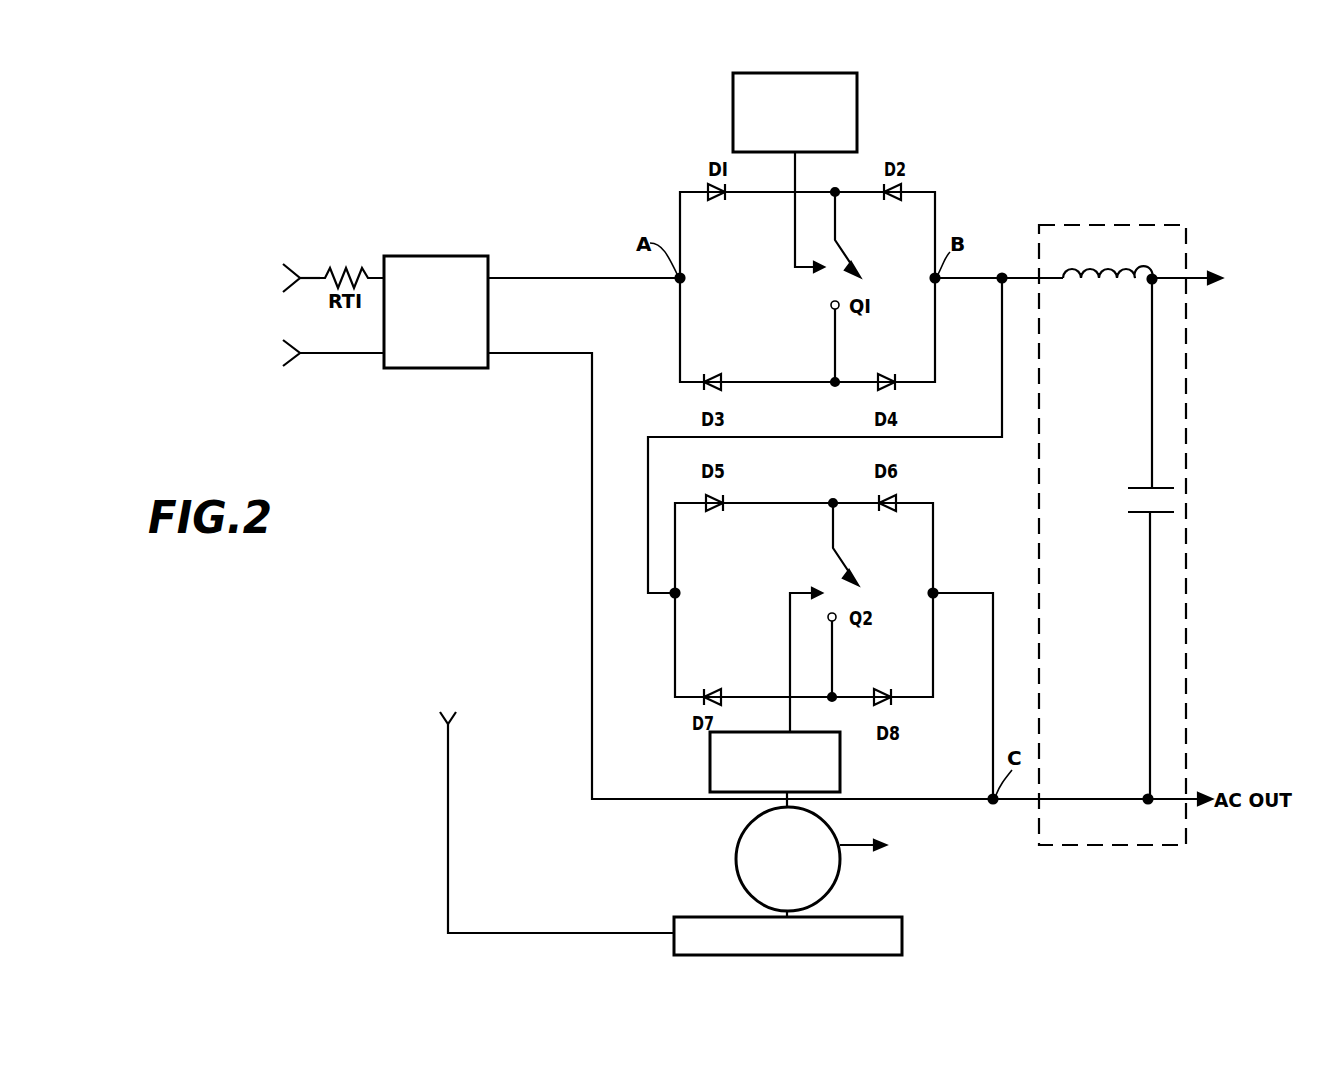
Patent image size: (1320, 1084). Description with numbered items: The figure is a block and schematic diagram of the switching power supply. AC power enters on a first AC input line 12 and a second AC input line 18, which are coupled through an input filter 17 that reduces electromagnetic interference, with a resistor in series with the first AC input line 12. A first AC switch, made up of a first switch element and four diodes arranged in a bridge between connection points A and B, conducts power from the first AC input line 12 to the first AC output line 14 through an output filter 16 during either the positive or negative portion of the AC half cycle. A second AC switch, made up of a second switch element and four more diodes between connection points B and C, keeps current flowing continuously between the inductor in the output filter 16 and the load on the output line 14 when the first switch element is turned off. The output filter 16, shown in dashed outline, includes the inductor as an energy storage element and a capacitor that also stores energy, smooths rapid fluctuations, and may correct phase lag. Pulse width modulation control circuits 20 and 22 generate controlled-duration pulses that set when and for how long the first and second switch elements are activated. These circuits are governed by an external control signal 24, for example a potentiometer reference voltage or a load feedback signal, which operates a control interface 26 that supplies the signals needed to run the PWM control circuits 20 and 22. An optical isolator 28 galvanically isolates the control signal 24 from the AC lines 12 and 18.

The first AC input line 12 is at (312, 278).
The first AC output line 14 is at (1198, 276).
The output filter 16 is at (1058, 222).
The input filter 17 is at (470, 256).
The second AC input line 18 is at (340, 355).
The pulse width modulation control circuit 20 is at (857, 108).
The pulse width modulation control circuit 22 is at (840, 765).
The external control signal 24 is at (446, 768).
The control interface 26 is at (902, 934).
The optical isolator 28 is at (737, 846).